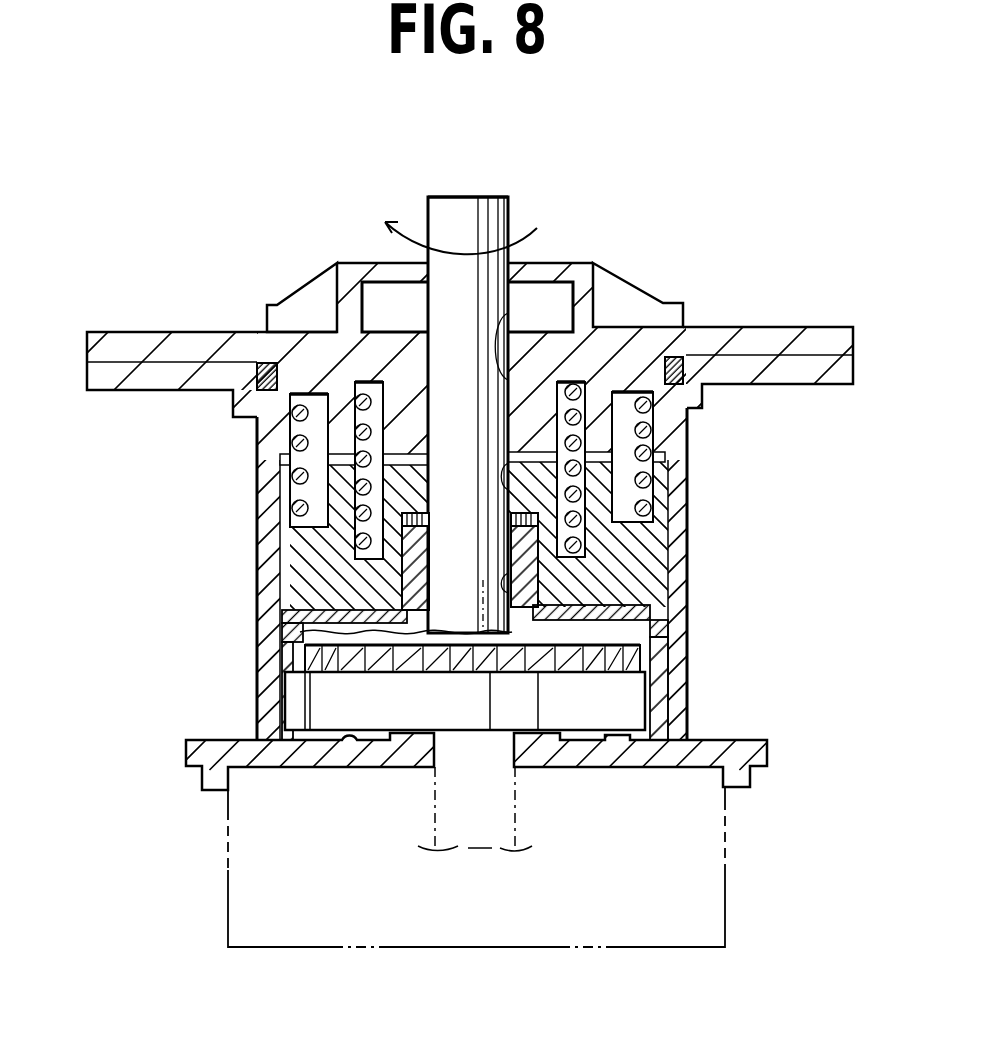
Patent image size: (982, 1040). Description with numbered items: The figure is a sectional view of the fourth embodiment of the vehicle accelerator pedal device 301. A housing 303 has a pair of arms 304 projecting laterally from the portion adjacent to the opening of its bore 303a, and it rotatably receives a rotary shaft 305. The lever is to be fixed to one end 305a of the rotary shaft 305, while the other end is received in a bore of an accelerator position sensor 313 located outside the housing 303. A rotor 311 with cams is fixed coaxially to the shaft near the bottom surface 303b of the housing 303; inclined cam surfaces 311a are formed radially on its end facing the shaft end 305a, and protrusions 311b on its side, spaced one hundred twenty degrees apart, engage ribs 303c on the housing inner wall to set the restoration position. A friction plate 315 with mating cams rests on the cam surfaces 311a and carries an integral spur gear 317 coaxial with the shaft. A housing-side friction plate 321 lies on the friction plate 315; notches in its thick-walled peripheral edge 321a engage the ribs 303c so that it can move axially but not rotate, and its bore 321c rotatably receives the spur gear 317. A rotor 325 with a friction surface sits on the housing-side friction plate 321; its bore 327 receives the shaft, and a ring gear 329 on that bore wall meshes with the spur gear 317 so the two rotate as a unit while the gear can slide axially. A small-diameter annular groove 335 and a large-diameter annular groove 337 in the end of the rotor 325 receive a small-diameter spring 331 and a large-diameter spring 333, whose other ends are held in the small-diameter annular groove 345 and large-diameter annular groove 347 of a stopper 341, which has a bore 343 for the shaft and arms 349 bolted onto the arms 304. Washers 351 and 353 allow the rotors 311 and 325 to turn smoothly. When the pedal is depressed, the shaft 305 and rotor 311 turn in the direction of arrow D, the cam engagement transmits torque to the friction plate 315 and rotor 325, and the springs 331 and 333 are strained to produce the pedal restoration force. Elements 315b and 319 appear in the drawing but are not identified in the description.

The accelerator pedal device 301 is at (823, 183).
The housing 303 is at (688, 515).
The bore 303a is at (280, 365).
The bottom surface 303b is at (310, 767).
The ribs 303c is at (268, 650).
The arms 304 is at (141, 390).
The rotary shaft 305 is at (508, 222).
The end of the rotary shaft 305a is at (456, 197).
The rotor with cam 311 is at (623, 693).
The cam surfaces 311a is at (587, 655).
The protrusions 311b is at (340, 698).
The accelerator position sensor 313 is at (440, 948).
The friction plate with cams 315 is at (340, 648).
The magnet ring side 315b is at (292, 690).
The spur gear 317 is at (415, 563).
The bearing 319 is at (522, 542).
The housing-side friction plate 321 is at (320, 614).
The thick-walled peripheral edge 321a is at (655, 612).
The bore 321c is at (530, 592).
The rotor with friction surface 325 is at (316, 546).
The bore 327 is at (585, 487).
The ring gear 329 is at (590, 505).
The small-diameter spring 331 is at (618, 392).
The large-diameter spring 333 is at (683, 327).
The small-diameter annular groove 335 is at (295, 458).
The large-diameter annular groove 337 is at (300, 495).
The stopper 341 is at (310, 393).
The bore 343 is at (574, 382).
The small-diameter annular groove 345 is at (375, 380).
The large-diameter annular groove 347 is at (280, 398).
The arms 349 is at (137, 333).
The washer 351 is at (540, 735).
The washer 353 is at (560, 433).